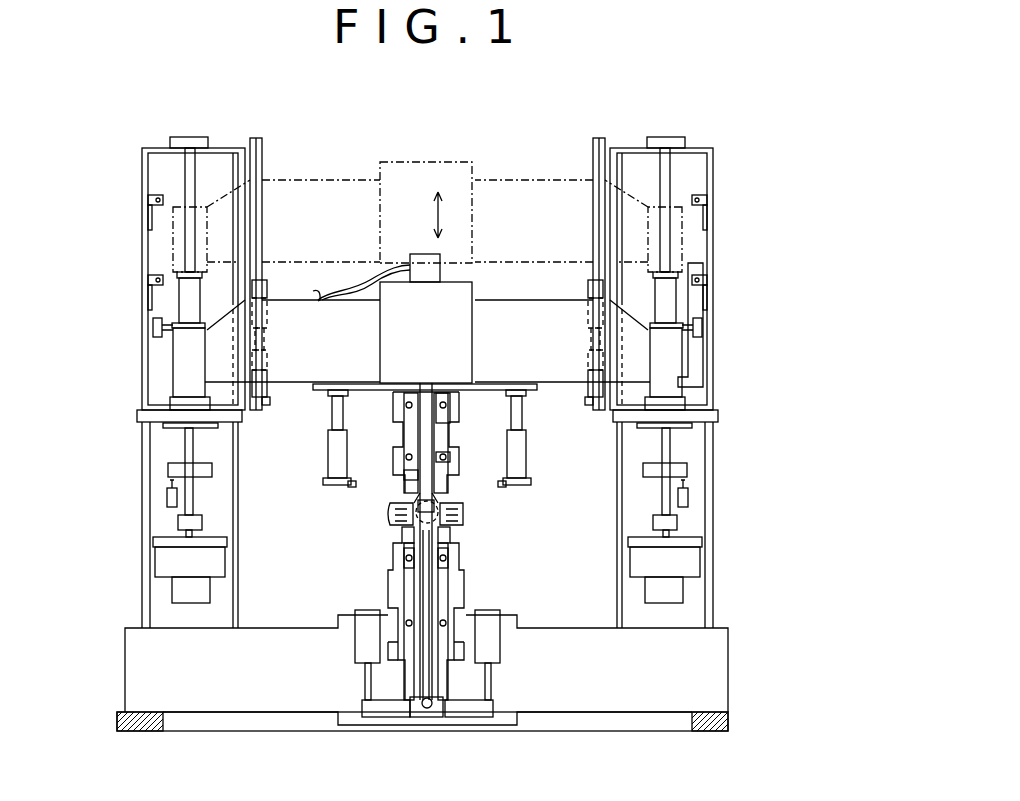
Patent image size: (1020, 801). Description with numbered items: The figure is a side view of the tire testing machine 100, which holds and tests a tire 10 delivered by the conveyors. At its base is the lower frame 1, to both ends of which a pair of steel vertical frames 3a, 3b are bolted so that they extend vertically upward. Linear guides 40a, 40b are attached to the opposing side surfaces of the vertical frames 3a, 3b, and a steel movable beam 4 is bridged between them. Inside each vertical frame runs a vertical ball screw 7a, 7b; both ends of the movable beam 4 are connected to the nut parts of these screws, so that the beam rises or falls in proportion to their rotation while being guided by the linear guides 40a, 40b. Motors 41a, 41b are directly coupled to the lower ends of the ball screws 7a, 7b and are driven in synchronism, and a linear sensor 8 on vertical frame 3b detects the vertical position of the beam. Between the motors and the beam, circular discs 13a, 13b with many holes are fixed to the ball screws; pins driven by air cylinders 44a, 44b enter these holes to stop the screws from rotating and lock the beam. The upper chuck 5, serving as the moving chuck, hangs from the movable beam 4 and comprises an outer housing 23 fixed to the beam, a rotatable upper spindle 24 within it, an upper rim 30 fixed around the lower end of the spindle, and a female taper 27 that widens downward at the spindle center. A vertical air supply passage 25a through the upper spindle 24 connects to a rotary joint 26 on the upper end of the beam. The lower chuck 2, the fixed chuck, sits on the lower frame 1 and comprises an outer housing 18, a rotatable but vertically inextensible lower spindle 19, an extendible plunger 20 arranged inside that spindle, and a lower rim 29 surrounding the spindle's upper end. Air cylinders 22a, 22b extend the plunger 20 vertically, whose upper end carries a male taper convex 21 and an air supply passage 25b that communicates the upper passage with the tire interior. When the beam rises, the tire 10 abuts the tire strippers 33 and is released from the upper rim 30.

The tire testing machine 100 is at (636, 106).
The lower frame 1 is at (130, 678).
The lower chuck 2 is at (300, 495).
The vertical frame 3a is at (142, 165).
The vertical frame 3b is at (712, 165).
The movable beam 4 is at (291, 306).
The upper chuck 5 is at (582, 440).
The ball screw 7a is at (186, 192).
The ball screw 7b is at (668, 192).
The linear sensor 8 is at (703, 320).
The tire 10 is at (478, 543).
The circular disc 13a is at (168, 470).
The circular disc 13b is at (683, 470).
The outer housing 18 is at (392, 590).
The lower spindle 19 is at (402, 548).
The plunger 20 is at (392, 518).
The taper convex 21 is at (406, 494).
The air cylinder 22a is at (365, 686).
The air cylinder 22b is at (490, 686).
The outer housing 23 is at (452, 440).
The upper spindle 24 is at (452, 460).
The air supply passage 25a is at (420, 430).
The air supply passage 25b is at (452, 565).
The rotary joint 26 is at (440, 271).
The female taper 27 is at (454, 496).
The lower rim 29 is at (402, 532).
The upper rim 30 is at (470, 525).
The tire stripper 33 is at (333, 418).
The linear guide 40a is at (262, 160).
The linear guide 40b is at (590, 160).
The motor 41a is at (172, 595).
The motor 41b is at (682, 595).
The air cylinder 44a is at (167, 497).
The air cylinder 44b is at (687, 497).